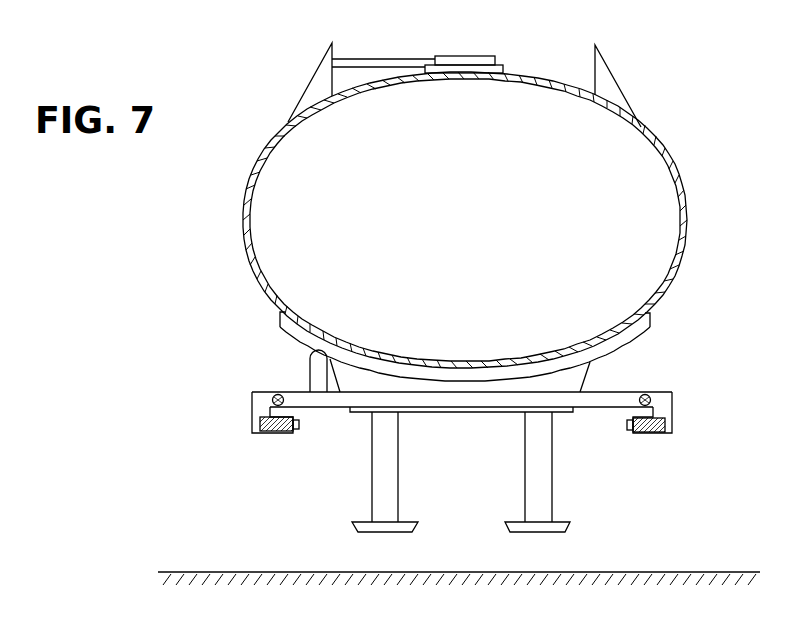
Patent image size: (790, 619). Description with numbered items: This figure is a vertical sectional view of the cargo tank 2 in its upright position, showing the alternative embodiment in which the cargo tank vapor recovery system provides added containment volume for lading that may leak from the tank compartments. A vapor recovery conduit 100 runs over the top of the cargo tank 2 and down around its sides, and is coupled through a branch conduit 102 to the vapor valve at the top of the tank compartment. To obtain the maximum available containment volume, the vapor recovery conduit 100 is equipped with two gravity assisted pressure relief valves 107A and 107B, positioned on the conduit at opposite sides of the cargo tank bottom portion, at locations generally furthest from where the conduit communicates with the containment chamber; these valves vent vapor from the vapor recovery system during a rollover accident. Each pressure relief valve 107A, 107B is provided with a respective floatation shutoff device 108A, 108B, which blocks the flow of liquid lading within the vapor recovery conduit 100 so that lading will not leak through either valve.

The cargo tank 2 is at (250, 208).
The vapor recovery conduit 100 is at (312, 78).
The branch conduits 102 is at (379, 60).
The gravity assisted pressure relief valve 107A is at (283, 435).
The gravity assisted pressure relief valve 107B is at (635, 435).
The floatation shutoff device 108A is at (270, 398).
The floatation shutoff device 108B is at (658, 390).